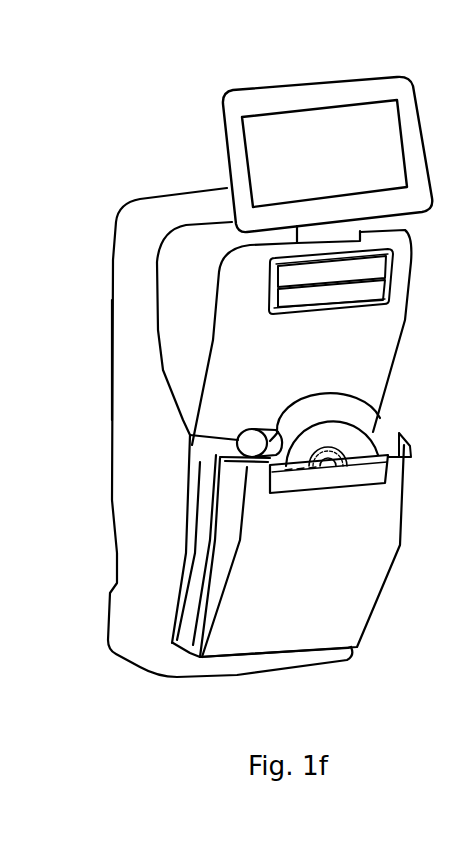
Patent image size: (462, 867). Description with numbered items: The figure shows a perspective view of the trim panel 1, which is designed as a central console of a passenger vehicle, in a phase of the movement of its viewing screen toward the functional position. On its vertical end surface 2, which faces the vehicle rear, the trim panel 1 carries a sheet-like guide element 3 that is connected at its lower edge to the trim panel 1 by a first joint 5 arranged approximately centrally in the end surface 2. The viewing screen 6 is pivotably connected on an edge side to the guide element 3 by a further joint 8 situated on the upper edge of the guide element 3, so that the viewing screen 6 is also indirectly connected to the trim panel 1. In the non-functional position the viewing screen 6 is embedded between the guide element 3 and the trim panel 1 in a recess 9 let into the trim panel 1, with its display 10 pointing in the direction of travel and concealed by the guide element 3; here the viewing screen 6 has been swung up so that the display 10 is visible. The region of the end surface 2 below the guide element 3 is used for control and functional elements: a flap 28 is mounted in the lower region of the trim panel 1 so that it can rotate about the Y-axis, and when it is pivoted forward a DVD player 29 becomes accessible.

The trim panel 1 is at (147, 223).
The vertical end surface 2 is at (357, 647).
The guide element 3 is at (363, 353).
The first joint 5 is at (335, 398).
The viewing screen 6 is at (404, 97).
The further joint 8 is at (405, 235).
The recess 9 is at (150, 308).
The display 10 is at (265, 132).
The flap 28 is at (385, 505).
The DVD player 29 is at (413, 457).